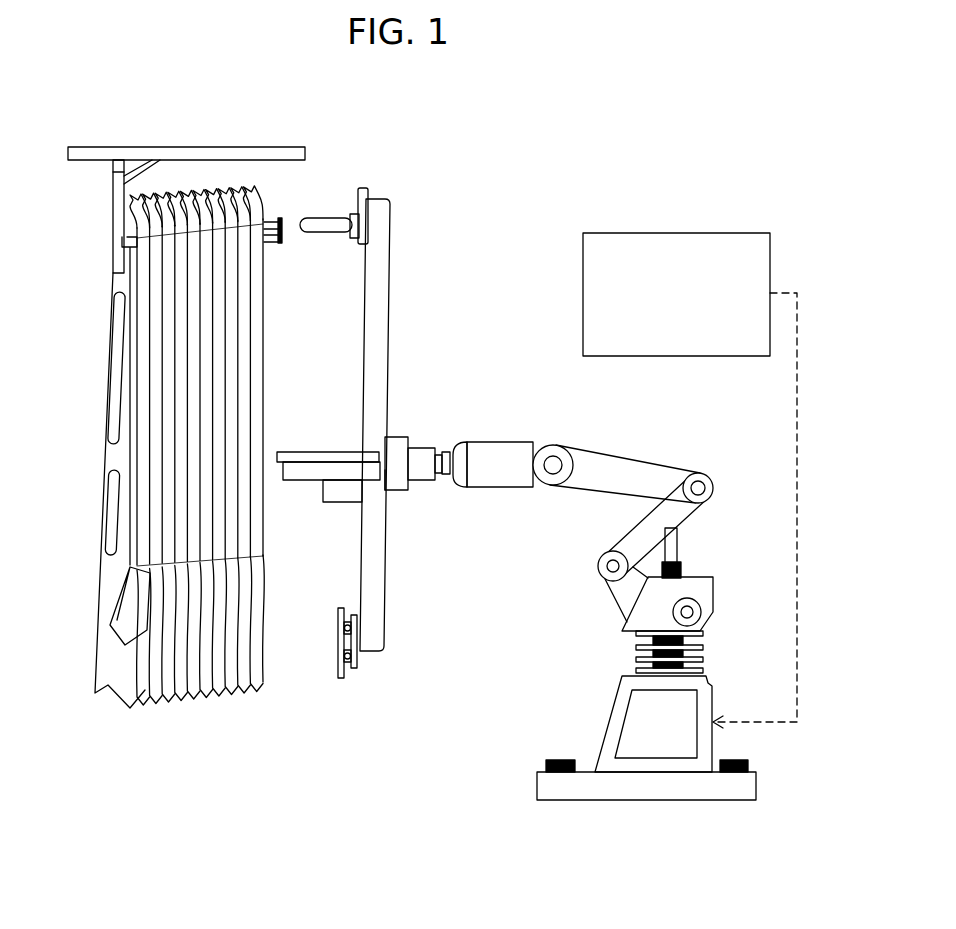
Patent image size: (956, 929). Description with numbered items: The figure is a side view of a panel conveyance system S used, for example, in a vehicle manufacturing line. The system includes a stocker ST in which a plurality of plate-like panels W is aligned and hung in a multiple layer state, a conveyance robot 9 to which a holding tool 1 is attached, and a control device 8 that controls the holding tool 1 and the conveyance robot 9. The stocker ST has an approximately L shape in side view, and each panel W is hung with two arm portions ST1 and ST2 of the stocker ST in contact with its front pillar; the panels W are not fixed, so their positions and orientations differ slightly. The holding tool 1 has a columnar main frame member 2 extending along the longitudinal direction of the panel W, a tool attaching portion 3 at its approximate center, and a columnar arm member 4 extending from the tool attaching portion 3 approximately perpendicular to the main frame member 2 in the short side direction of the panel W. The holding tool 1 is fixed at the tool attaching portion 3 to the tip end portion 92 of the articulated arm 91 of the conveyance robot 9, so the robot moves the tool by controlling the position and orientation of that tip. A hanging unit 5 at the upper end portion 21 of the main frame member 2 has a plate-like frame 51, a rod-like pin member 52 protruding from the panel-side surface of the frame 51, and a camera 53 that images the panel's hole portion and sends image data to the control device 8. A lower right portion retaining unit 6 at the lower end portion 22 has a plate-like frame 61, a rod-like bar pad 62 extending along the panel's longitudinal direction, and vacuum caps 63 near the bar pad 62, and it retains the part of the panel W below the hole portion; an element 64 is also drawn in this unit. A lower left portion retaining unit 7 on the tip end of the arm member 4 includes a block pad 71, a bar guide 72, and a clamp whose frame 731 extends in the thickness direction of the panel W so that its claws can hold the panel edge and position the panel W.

The panel conveyance system S is at (610, 117).
The holding tool 1 is at (535, 467).
The main frame member 2 is at (417, 425).
The upper end portion 21 is at (390, 216).
The lower end portion 22 is at (372, 605).
The tool attaching portion 3 is at (395, 445).
The arm member 4 is at (386, 472).
The hanging unit 5 is at (368, 218).
The frame 51 is at (358, 247).
The pin member 52 is at (316, 216).
The camera 53 is at (360, 192).
The lower right portion retaining unit 6 is at (380, 685).
The frame 61 is at (355, 632).
The bar pad 62 is at (341, 678).
The vacuum caps 63 is at (357, 665).
The second roller 64 is at (355, 650).
The lower left portion retaining unit 7 is at (326, 457).
The block pad 71 is at (352, 498).
The bar guide 72 is at (325, 453).
The frame 731 is at (313, 480).
The control device 8 is at (738, 233).
The conveyance robot 9 is at (604, 588).
The articulated arm 91 is at (625, 472).
The tip end portion 92 is at (425, 455).
The panel W is at (253, 205).
The stocker ST is at (119, 242).
The arm portion ST1 is at (283, 197).
The arm portion ST2 is at (283, 197).